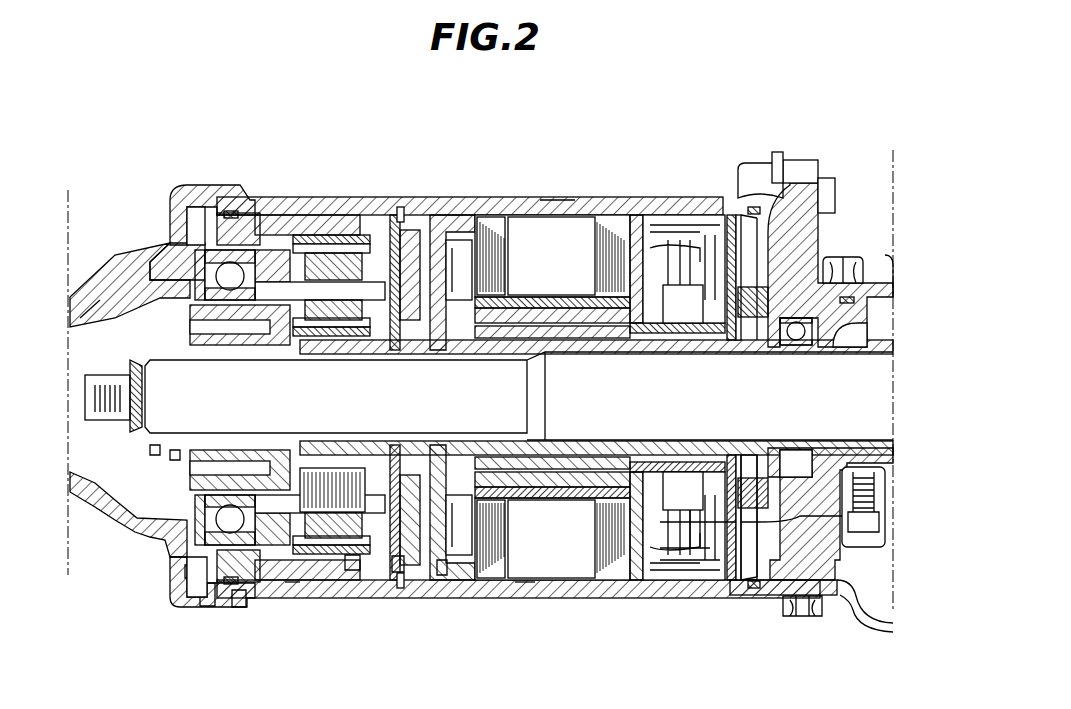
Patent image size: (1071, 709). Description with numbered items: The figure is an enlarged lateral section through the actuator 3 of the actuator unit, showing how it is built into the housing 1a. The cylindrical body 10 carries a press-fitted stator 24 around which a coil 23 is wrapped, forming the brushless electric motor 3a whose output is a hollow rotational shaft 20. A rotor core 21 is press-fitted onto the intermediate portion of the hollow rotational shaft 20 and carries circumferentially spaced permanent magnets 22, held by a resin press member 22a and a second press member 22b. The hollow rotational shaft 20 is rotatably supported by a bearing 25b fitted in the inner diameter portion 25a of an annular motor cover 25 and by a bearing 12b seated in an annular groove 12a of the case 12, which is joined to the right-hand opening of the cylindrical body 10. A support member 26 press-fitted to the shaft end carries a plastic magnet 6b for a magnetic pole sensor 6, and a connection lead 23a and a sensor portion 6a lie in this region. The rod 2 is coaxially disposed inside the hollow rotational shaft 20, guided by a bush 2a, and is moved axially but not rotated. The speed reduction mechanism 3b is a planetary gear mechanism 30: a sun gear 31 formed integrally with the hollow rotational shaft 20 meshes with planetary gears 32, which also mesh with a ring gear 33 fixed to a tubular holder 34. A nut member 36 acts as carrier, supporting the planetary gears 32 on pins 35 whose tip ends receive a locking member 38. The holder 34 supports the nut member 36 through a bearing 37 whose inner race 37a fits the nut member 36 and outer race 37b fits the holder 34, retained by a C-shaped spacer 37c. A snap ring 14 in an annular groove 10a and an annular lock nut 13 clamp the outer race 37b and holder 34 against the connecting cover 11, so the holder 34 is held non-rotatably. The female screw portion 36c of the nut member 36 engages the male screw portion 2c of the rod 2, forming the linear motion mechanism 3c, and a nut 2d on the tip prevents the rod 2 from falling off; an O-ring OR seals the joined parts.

The housing 1a is at (557, 195).
The rod 2 is at (600, 410).
The bush 2a is at (878, 292).
The male screw portion 2c is at (147, 448).
The nut 2d is at (120, 432).
The actuator 3 is at (702, 200).
The electric motor 3a is at (524, 570).
The speed reduction mechanism 3b is at (293, 578).
The linear motion mechanism 3c is at (170, 446).
The magnetic pole sensor 6 is at (747, 272).
The end plate flange 6a is at (750, 270).
The plastic magnet 6b is at (745, 560).
The cylindrical body 10 is at (537, 198).
The annular groove 10a is at (394, 565).
The connecting cover 11 is at (185, 310).
The case 12 is at (808, 258).
The annular groove 12a is at (792, 580).
The bearing 12b is at (836, 580).
The lock nut 13 is at (190, 196).
The snap ring 14 is at (399, 208).
The hollow rotational shaft 20 is at (535, 245).
The core 21 is at (557, 300).
The permanent magnet 22 is at (547, 485).
The press member 22a is at (497, 565).
The press member 22b is at (668, 560).
The coil 23 is at (660, 232).
The lead wires 23a is at (696, 560).
The stator 24 is at (612, 210).
The motor cover 25 is at (438, 230).
The inner diameter portion 25a is at (440, 565).
The bearing 25b is at (353, 565).
The support member 26 is at (780, 480).
The planetary gear mechanism 30 is at (338, 512).
The sun gear 31 is at (415, 228).
The planetary gear 32 is at (348, 260).
The ring gear 33 is at (320, 235).
The holder 34 is at (291, 215).
The pin 35 is at (250, 248).
The nut member 36 is at (118, 285).
The female screw portion 36c is at (125, 305).
The bearing 37 is at (165, 205).
The inner race 37a is at (208, 580).
The outer race 37b is at (238, 600).
The C-shaped spacer 37c is at (182, 570).
The locking member 38 is at (392, 222).
The O-ring OR is at (225, 200).